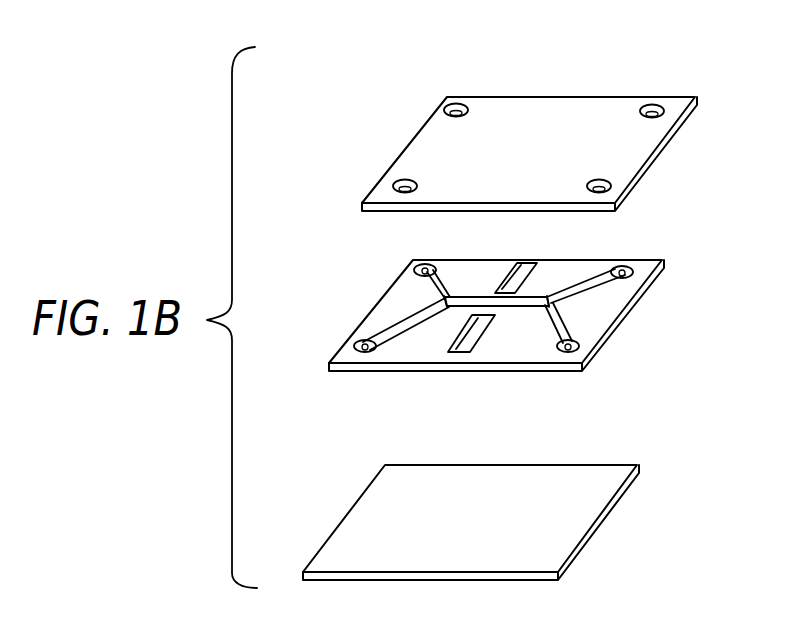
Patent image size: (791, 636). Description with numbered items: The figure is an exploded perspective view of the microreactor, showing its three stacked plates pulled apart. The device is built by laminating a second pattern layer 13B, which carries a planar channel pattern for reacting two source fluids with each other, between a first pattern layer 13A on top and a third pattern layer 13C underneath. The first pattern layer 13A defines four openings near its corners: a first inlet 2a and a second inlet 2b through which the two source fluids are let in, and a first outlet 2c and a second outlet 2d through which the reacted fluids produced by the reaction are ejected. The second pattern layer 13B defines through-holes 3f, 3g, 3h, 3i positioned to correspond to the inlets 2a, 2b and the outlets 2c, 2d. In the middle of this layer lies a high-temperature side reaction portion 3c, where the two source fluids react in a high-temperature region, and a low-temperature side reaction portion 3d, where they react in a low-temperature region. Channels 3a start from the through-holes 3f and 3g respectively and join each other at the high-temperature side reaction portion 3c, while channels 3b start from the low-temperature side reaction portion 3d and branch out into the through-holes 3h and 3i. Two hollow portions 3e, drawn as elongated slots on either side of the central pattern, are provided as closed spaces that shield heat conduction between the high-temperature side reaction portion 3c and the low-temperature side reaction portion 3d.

The first pattern layer 13A is at (698, 104).
The second pattern layer 13B is at (633, 262).
The third pattern layer 13C is at (613, 510).
The first inlet 2a is at (652, 105).
The second inlet 2b is at (600, 181).
The first outlet 2c is at (456, 103).
The second outlet 2d is at (405, 180).
The channels 3a is at (566, 319).
The channels 3b is at (403, 322).
The high-temperature side reaction portion 3c is at (547, 305).
The low-temperature side reaction portion 3d is at (460, 303).
The hollow portions 3e is at (507, 263).
The through-hole 3f is at (632, 272).
The through-hole 3g is at (580, 347).
The through-hole 3h is at (417, 273).
The through-hole 3i is at (360, 344).